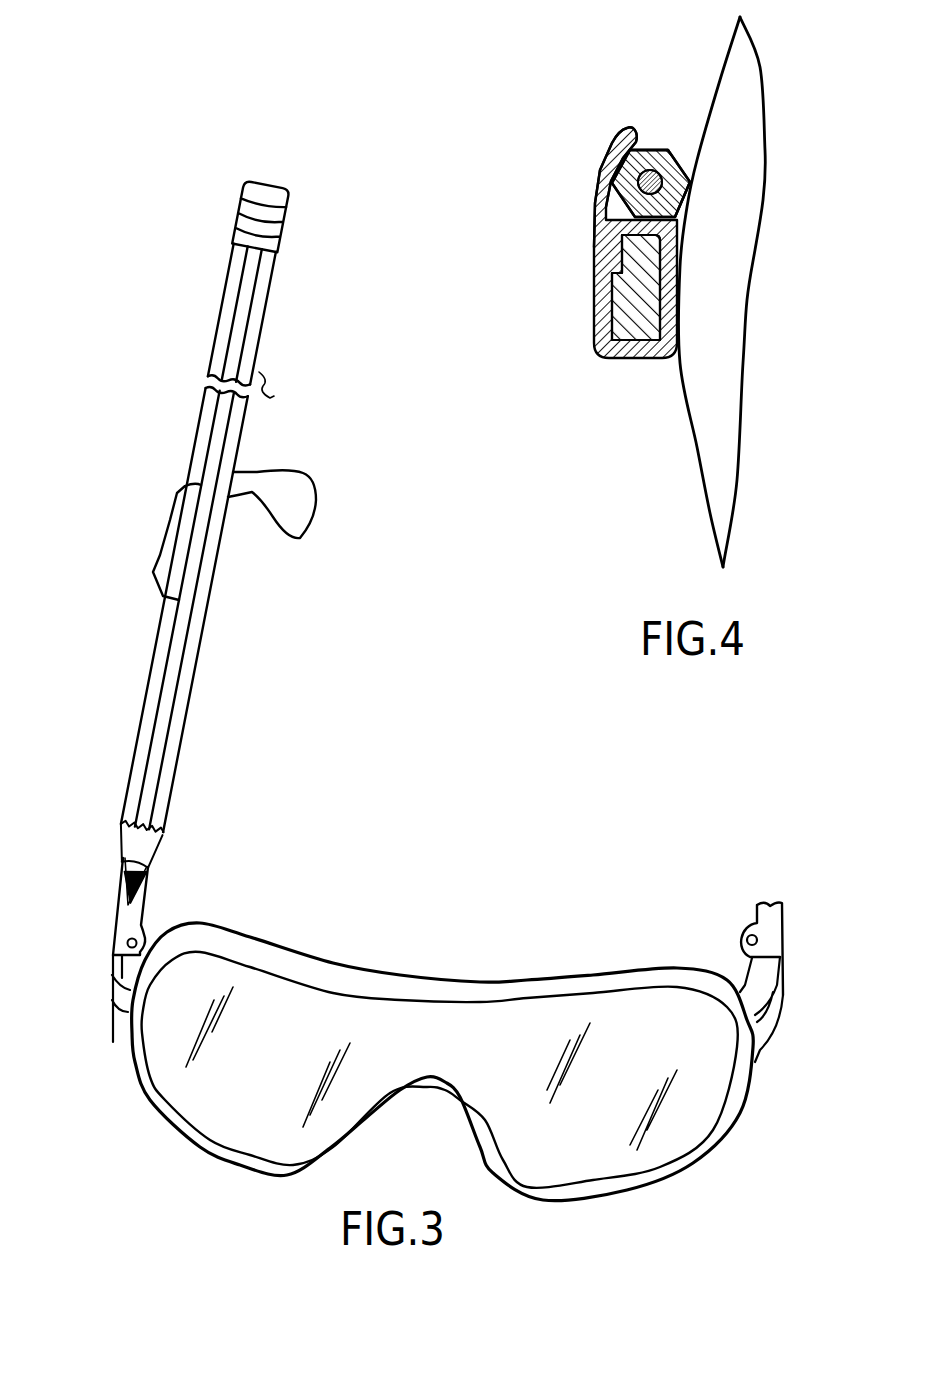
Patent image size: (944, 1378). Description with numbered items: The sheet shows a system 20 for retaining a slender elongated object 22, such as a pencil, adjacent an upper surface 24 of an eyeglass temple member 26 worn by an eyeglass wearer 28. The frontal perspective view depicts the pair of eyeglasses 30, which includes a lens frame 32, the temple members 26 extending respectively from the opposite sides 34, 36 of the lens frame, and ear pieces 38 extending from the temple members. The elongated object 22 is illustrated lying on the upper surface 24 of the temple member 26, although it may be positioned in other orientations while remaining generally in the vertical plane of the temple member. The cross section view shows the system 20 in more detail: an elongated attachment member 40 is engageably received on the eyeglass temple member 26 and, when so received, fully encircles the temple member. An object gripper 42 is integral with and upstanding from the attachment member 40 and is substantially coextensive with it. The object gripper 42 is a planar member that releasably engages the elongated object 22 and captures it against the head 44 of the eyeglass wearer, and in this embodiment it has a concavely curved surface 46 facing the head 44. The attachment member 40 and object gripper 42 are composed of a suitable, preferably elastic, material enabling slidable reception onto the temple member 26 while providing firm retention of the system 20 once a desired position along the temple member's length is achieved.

In FIG. 3, the system 20 is at (100, 549).
In FIG. 4, the system 20 is at (546, 252).
In FIG. 3, the slender elongated object 22 is at (178, 648).
In FIG. 4, the slender elongated object 22 is at (666, 152).
In FIG. 3, the upper surface 24 is at (118, 922).
In FIG. 4, the upper surface 24 is at (687, 196).
In FIG. 3, the eyeglass temple member 26 is at (152, 888).
In FIG. 4, the eyeglass temple member 26 is at (613, 310).
In FIG. 3, the eyeglass wearer 28 is at (748, 911).
In FIG. 3, the eyeglasses 30 is at (238, 1168).
In FIG. 3, the lens frame 32 is at (557, 992).
In FIG. 3, the side of the lens frame 34 is at (137, 1031).
In FIG. 3, the side of the lens frame 36 is at (748, 1043).
In FIG. 3, the ear piece 38 is at (298, 488).
In FIG. 4, the elongated attachment member 40 is at (633, 357).
In FIG. 3, the object gripper 42 is at (172, 523).
In FIG. 4, the object gripper 42 is at (606, 158).
In FIG. 4, the head 44 is at (742, 65).
In FIG. 4, the concavely curved surface 46 is at (657, 145).